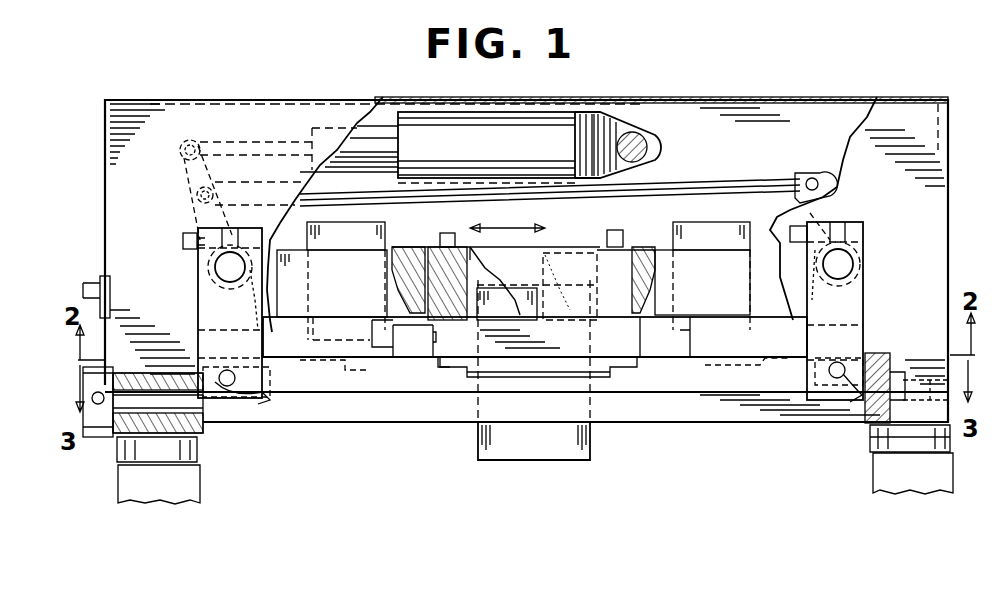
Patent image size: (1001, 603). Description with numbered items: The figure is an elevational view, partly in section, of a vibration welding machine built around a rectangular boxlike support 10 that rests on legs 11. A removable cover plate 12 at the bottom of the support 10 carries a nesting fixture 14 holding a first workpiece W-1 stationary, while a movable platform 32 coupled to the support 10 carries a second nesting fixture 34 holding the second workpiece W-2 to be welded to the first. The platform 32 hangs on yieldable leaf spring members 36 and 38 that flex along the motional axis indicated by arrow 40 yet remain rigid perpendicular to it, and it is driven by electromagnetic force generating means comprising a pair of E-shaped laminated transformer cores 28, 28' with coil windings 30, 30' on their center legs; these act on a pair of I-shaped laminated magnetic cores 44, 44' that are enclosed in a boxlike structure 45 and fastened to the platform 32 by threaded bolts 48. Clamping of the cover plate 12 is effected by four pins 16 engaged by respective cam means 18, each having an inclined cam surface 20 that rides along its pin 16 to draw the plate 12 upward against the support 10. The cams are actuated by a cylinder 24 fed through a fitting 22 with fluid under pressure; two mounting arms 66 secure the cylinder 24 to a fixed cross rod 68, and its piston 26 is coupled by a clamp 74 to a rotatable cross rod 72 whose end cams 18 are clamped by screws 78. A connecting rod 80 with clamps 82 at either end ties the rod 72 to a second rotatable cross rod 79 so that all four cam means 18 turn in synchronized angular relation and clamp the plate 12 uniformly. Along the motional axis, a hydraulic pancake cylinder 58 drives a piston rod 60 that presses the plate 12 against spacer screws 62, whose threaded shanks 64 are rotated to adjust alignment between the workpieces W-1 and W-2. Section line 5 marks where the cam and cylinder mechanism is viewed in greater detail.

The section line 5— 5 is at (190, 100).
The support 10 is at (889, 197).
The legs 11 is at (885, 437).
The cover plate 12 is at (632, 408).
The nesting fixture 14 is at (625, 380).
The pins 16 is at (238, 372).
The cam means 18 is at (237, 319).
The cam surface 20 is at (255, 390).
The fitting 22 is at (100, 280).
The cylinder 24 is at (503, 152).
The piston 26 is at (381, 154).
The transformer core 28 is at (332, 295).
The transformer core 28' is at (702, 290).
The coil winding 30 is at (346, 236).
The coil winding 30' is at (711, 233).
The movable platform 32 is at (568, 341).
The nesting fixture 34 is at (440, 365).
The leaf spring member 36 is at (412, 343).
The leaf spring member 38 is at (665, 338).
The arrow 40 is at (515, 226).
The magnetic core 44 is at (496, 298).
The magnetic core 44' is at (537, 285).
The boxlike structure 45 is at (478, 247).
The threaded bolts 48 is at (443, 235).
The hydraulic pancake cylinder 58 is at (100, 420).
The piston rod 60 is at (190, 397).
The spacer screws 62 is at (880, 352).
The threaded shanks 64 is at (912, 420).
The mounting arms 66 is at (597, 125).
The fixed cross rod 68 is at (645, 137).
The cross rod 72 is at (222, 273).
The clamp 74 is at (180, 164).
The screws 78 is at (184, 246).
The second rotatable cross rod 79 is at (845, 262).
The connecting rod 80 is at (738, 180).
The clamps 82 is at (808, 173).
The first workpiece W-1 is at (550, 451).
The second workpiece W-2 is at (522, 314).